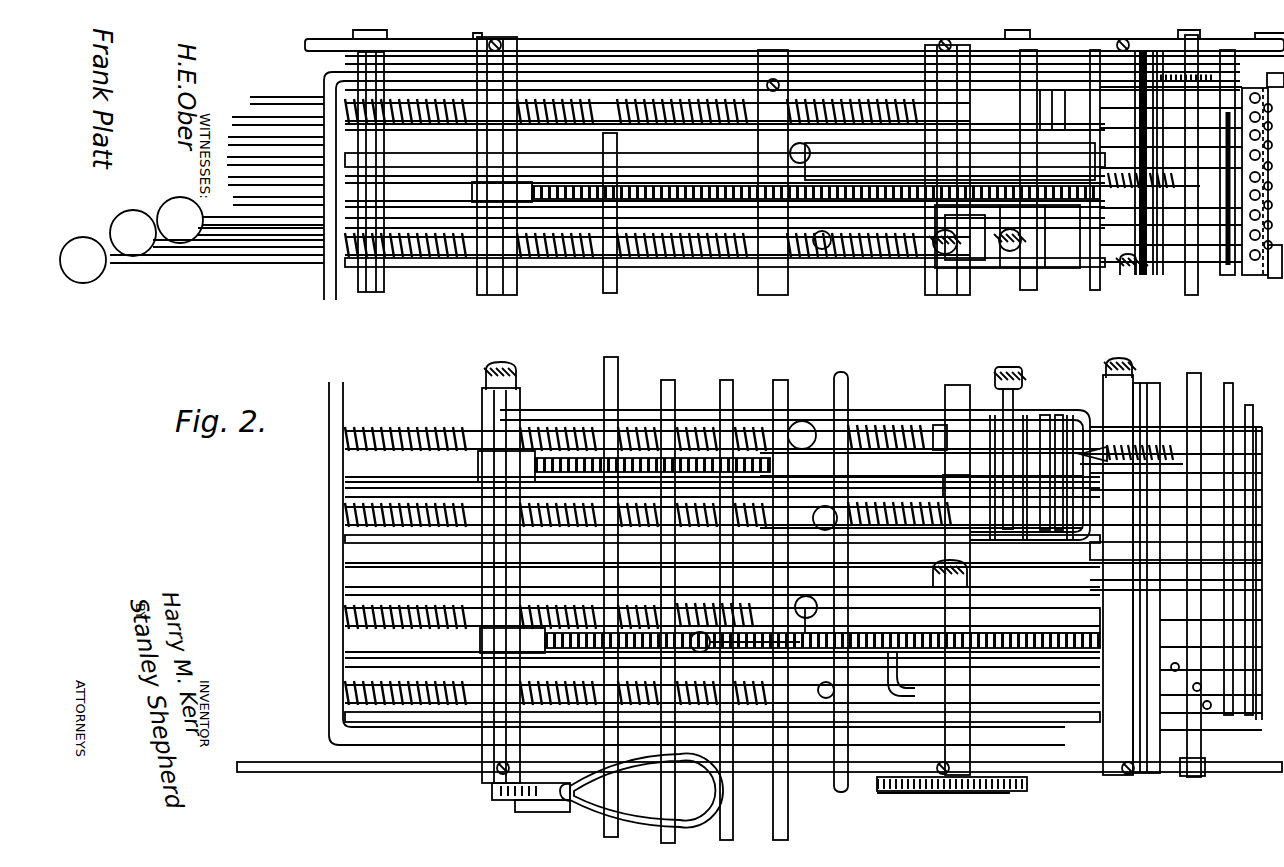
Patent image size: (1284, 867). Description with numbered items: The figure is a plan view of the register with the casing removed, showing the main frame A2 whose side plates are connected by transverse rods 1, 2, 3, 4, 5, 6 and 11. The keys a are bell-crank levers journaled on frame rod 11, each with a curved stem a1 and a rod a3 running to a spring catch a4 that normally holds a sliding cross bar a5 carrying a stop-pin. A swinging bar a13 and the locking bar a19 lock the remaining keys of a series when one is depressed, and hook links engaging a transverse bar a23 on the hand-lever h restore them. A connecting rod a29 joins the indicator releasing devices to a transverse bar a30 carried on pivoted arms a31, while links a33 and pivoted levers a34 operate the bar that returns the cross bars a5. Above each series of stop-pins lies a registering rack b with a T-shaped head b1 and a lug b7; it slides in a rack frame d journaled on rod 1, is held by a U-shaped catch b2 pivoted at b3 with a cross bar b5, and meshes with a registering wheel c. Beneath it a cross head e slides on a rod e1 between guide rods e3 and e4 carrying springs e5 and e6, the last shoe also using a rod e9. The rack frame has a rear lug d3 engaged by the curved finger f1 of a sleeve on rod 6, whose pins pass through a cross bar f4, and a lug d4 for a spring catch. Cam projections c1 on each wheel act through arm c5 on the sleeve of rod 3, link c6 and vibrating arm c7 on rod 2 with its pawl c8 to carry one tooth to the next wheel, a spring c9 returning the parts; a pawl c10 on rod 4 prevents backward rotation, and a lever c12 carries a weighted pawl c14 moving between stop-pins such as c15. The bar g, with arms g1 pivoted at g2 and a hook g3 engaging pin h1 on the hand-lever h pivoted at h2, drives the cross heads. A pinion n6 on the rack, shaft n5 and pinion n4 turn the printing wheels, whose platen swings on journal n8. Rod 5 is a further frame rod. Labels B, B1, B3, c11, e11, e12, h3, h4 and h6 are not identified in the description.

The key a is at (165, 200).
The connecting rod a29 is at (400, 65).
The pivoted arm a31 is at (310, 62).
The main frame A2 is at (326, 280).
The frame rod 11 is at (330, 300).
The stem a1 is at (285, 268).
The spring supporting guide rod e3 is at (345, 158).
The spring e5 is at (555, 100).
The rod e9 is at (588, 100).
The spring supporting guide rod e4 is at (410, 524).
The spring e6 is at (448, 524).
The rod or wire a3 is at (450, 160).
The registering rack b is at (470, 262).
The frame rod 2 is at (950, 280).
The pivot b3 is at (973, 302).
The bracket B3 is at (935, 265).
The frame rod 1 is at (485, 292).
The shaft n5 is at (615, 272).
The pinion n6 is at (610, 300).
The projecting lug d4 is at (780, 790).
The hand-lever h is at (455, 793).
The stud or pin h1 is at (545, 812).
The pivot h2 is at (810, 598).
The pivot pin h4 is at (805, 145).
The link h3 is at (815, 250).
The arm h6 is at (834, 352).
The frame rod 5 is at (848, 378).
The transverse bar a23 is at (600, 280).
The transverse bar a30 is at (365, 280).
The cam projection c1 is at (680, 275).
The link c6 is at (712, 275).
The rack frame d is at (745, 270).
The spring catch a4 is at (830, 268).
The swinging bar a13 is at (1045, 90).
The registering wheel c is at (858, 268).
The vibrating arm c7 is at (915, 302).
The cross bar f4 is at (1005, 280).
The frame rod 6 is at (1010, 270).
The locking bar a19 is at (1045, 280).
The cross bar b5 is at (1070, 270).
The frame rod 3 is at (1120, 358).
The frame rod 4 is at (1150, 280).
The projecting arm c5 is at (1096, 181).
The spring c9 is at (1190, 395).
The pivoted pawl c10 is at (1171, 337).
The cross bar a5 is at (1192, 371).
The T-shaped head b1 is at (1250, 405).
The pivoted pawl c8 is at (952, 389).
The link c11 is at (902, 448).
The box frame B1 is at (795, 464).
The U-shaped catch b2 is at (950, 415).
The curved finger f1 is at (1052, 420).
The projecting lug d3 is at (1115, 372).
The cross head e is at (959, 460).
The bar e11 is at (873, 480).
The block e12 is at (941, 483).
The pinion n4 is at (812, 514).
The weighted pawl c14 is at (728, 540).
The stop-pin c15 is at (776, 575).
The journal n8 is at (790, 535).
The pivoted lever c12 is at (808, 687).
The supporting rod e1 is at (398, 497).
The base rail B is at (759, 710).
The bar g is at (1020, 793).
The arm g1 is at (970, 795).
The pivot g2 is at (908, 795).
The hook g3 is at (880, 795).
The pivoted lever a34 is at (1180, 770).
The link connection a33 is at (1250, 745).
The lug or spur b7 is at (1240, 603).